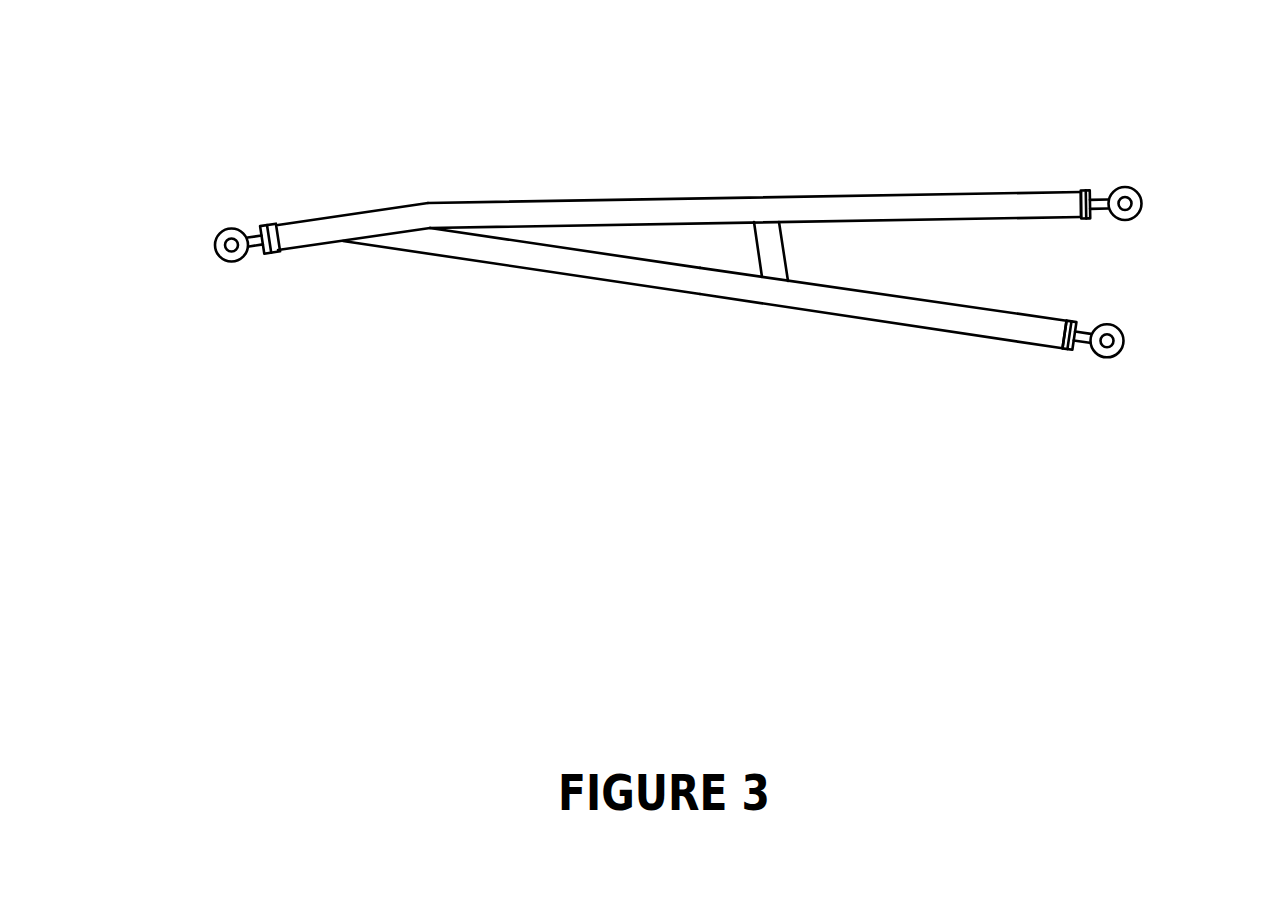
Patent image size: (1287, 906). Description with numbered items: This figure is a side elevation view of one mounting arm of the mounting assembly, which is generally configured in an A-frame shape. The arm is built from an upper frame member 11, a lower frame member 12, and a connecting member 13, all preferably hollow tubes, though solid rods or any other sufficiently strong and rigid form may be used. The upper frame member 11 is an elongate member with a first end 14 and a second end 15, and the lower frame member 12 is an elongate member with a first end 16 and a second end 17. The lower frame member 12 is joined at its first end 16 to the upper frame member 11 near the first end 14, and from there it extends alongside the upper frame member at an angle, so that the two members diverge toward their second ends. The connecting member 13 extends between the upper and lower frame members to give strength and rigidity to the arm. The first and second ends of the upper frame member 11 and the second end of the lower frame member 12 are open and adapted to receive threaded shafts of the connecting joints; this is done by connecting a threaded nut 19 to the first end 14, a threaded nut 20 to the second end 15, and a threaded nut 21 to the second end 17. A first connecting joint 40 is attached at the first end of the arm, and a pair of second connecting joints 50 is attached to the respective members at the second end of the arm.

The upper frame member 11 is at (632, 207).
The lower frame member 12 is at (843, 306).
The connecting member 13 is at (772, 255).
The first end 14 is at (338, 222).
The second end 15 is at (917, 193).
The first end 16 is at (437, 252).
The second end 17 is at (1047, 347).
The threaded nut 19 is at (278, 220).
The threaded nut 20 is at (1085, 193).
The threaded nut 21 is at (1072, 321).
The first connecting joint 40 is at (226, 262).
The second connecting joint 50 is at (1142, 198).